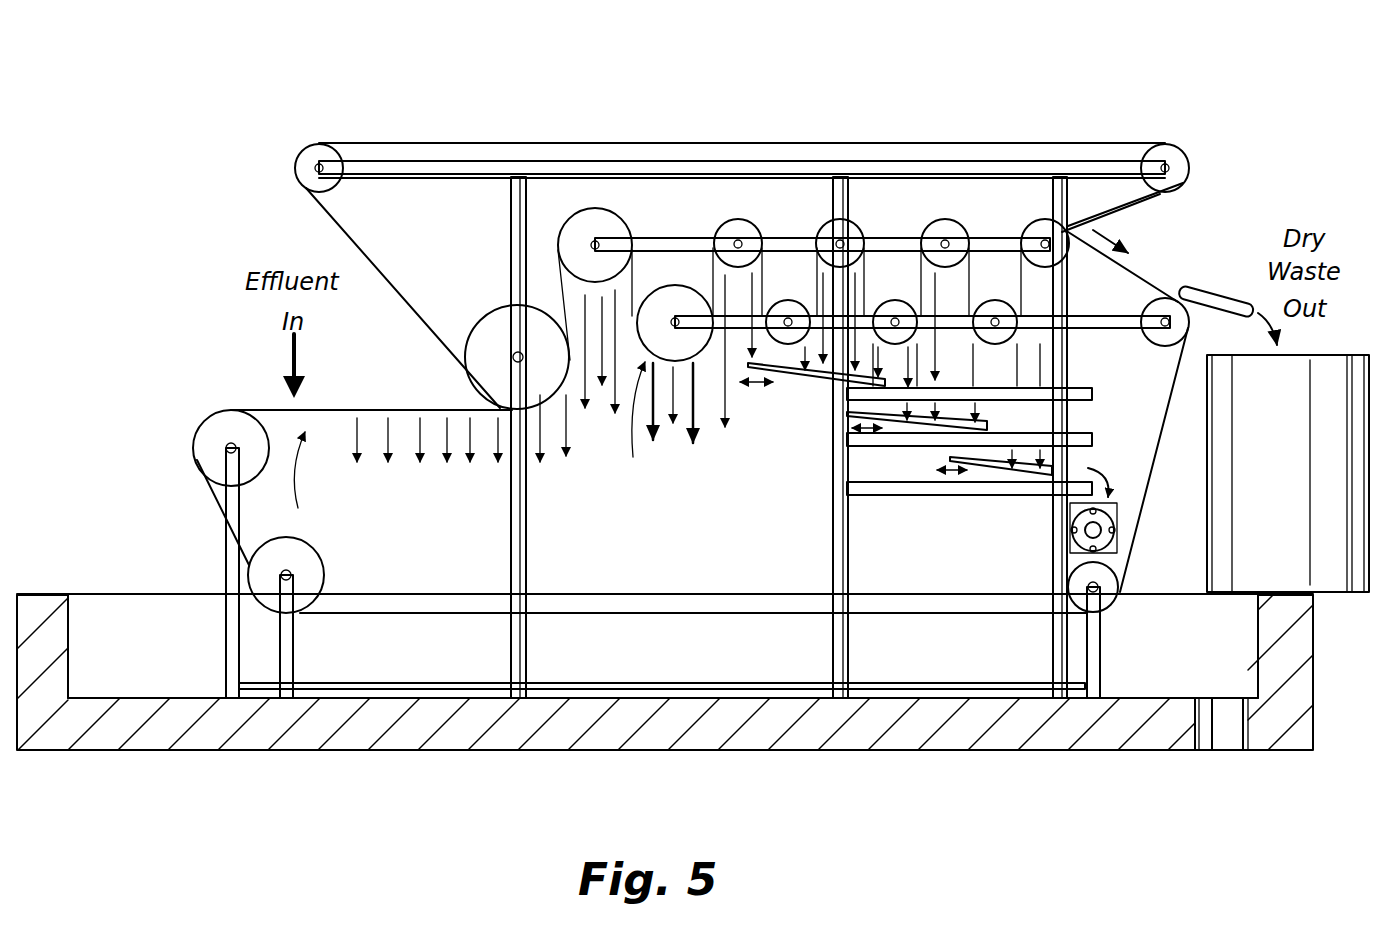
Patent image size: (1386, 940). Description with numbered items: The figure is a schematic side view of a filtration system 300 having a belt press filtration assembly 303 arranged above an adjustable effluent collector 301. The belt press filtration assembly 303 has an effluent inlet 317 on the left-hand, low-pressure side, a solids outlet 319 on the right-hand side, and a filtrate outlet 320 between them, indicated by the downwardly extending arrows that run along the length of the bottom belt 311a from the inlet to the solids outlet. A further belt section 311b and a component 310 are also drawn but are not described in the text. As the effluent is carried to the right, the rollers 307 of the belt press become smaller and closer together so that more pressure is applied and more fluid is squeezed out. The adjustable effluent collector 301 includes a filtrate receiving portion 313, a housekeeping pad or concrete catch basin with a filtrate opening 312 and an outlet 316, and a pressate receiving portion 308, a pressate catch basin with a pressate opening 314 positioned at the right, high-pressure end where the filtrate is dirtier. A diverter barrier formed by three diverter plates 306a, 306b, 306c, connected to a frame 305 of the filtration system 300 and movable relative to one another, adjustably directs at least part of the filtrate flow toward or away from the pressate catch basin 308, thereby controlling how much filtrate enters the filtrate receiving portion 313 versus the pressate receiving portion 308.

The filtration system 300 is at (1123, 97).
The adjustable effluent collector 301 is at (1117, 375).
The belt press filtration assembly 303 is at (462, 138).
The frame 305 is at (512, 221).
The diverter plate 306a is at (790, 372).
The diverter plate 306b is at (917, 422).
The diverter plate 306c is at (975, 472).
The rollers 307 is at (492, 330).
The pressate receiving portion 308 is at (1125, 500).
The bearing 310 is at (1117, 543).
The bottom belt 311a is at (322, 372).
The belt inclined section 311b is at (330, 228).
The filtrate opening 312 is at (72, 612).
The filtrate receiving portion 313 is at (1050, 738).
The pressate opening 314 is at (1112, 503).
The outlet 316 is at (1230, 735).
The effluent inlet 317 is at (428, 385).
The solids outlet 319 is at (1173, 256).
The filtrate outlet 320 is at (667, 397).